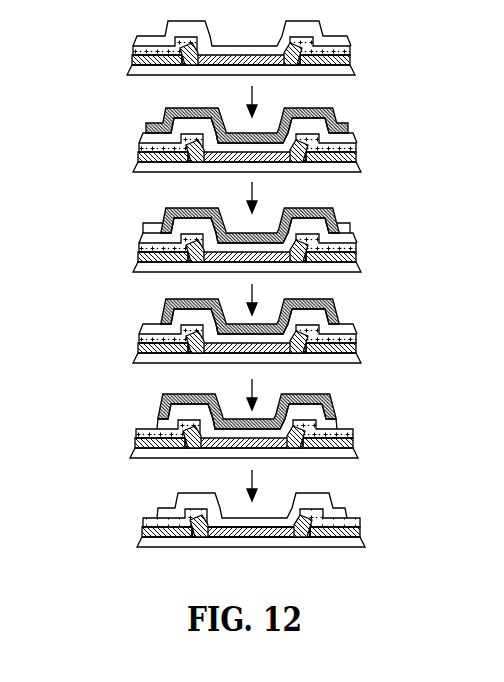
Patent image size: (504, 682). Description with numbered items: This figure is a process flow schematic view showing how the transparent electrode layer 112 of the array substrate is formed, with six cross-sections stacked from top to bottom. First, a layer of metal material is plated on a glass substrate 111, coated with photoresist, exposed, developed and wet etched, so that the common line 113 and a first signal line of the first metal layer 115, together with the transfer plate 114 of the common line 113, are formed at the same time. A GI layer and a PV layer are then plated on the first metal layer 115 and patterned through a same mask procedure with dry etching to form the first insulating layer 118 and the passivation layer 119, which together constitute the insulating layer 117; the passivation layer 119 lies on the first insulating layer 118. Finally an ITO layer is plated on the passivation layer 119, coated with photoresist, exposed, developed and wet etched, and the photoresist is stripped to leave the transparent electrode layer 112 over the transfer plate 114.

The glass substrate 111 is at (363, 544).
The transparent electrode layer 112 is at (177, 496).
The common line 113 is at (273, 560).
The transfer plate 114 is at (251, 552).
The first metal layer 115 is at (253, 552).
The insulating layer 117 is at (245, 538).
The first insulating layer 118 is at (141, 531).
The passivation layer 119 is at (142, 519).